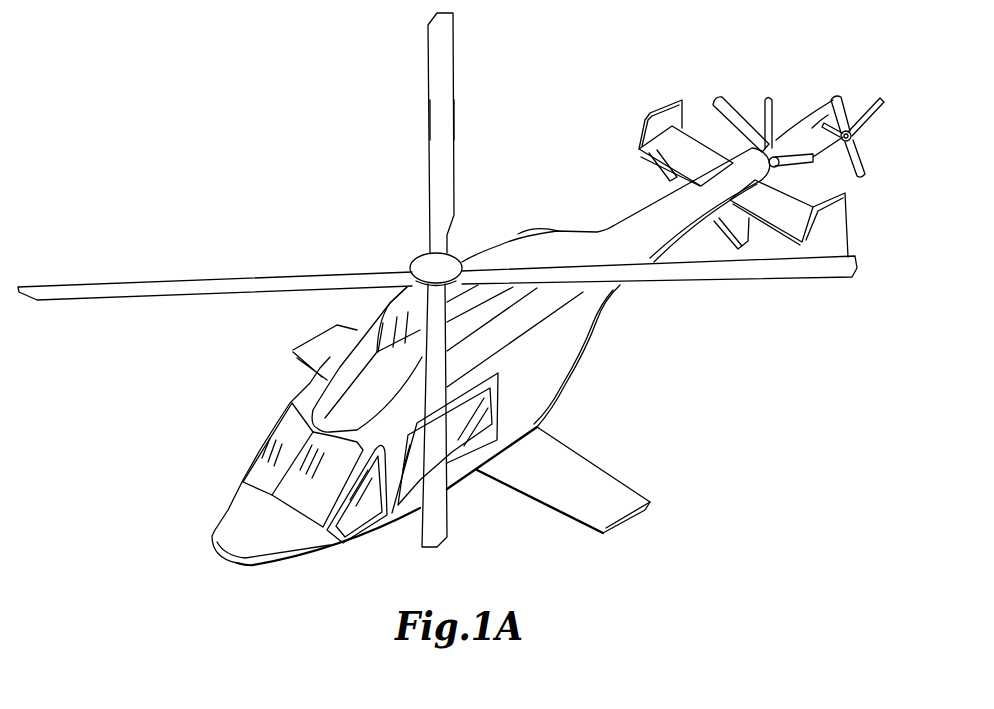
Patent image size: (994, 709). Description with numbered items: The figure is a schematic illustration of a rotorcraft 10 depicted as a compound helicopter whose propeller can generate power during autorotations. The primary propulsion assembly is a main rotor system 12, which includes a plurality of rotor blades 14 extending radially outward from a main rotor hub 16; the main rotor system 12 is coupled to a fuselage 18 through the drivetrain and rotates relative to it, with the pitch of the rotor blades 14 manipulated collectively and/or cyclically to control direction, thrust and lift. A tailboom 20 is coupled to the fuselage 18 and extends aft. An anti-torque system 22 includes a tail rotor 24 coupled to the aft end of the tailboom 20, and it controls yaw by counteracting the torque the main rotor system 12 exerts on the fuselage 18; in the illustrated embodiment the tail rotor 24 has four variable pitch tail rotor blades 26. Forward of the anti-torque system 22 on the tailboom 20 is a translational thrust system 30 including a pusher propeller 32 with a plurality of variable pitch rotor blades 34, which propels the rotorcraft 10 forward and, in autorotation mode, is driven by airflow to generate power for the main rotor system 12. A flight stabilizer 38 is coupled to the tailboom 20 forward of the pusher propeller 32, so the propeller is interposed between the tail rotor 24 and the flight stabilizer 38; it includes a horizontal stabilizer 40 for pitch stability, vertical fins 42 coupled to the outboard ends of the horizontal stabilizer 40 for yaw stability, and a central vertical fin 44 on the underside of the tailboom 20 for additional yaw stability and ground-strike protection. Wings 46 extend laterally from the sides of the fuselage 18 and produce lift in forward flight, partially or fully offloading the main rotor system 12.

The rotorcraft 10 is at (531, 74).
The main rotor system 12 is at (427, 36).
The rotor blades 14 is at (433, 112).
The main rotor hub 16 is at (423, 245).
The fuselage 18 is at (270, 548).
The tailboom 20 is at (605, 238).
The anti-torque system 22 is at (841, 93).
The tail rotor 24 is at (872, 118).
The tail rotor blades 26 is at (863, 174).
The translational thrust system 30 is at (727, 96).
The pusher propeller 32 is at (765, 128).
The rotor blades 34 is at (773, 142).
The flight stabilizer 38 is at (639, 157).
The horizontal stabilizer 40 is at (689, 140).
The vertical fins 42 is at (661, 118).
The central vertical fin 44 is at (745, 237).
The wings 46 is at (612, 486).